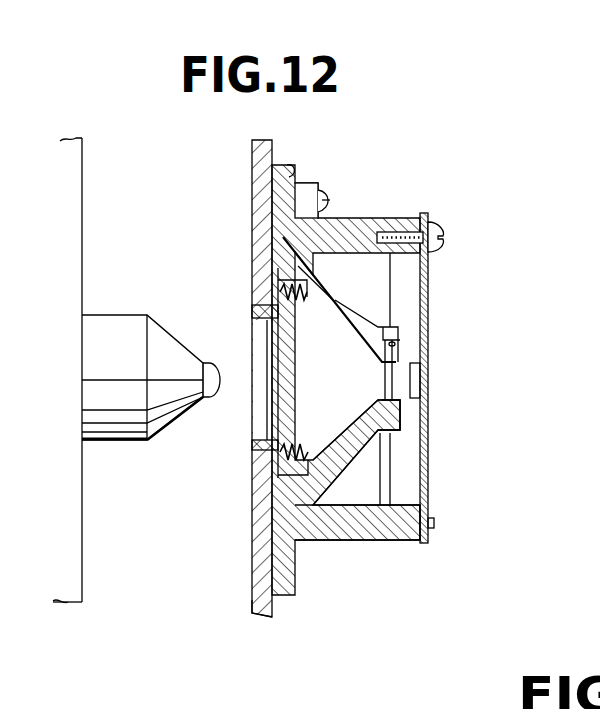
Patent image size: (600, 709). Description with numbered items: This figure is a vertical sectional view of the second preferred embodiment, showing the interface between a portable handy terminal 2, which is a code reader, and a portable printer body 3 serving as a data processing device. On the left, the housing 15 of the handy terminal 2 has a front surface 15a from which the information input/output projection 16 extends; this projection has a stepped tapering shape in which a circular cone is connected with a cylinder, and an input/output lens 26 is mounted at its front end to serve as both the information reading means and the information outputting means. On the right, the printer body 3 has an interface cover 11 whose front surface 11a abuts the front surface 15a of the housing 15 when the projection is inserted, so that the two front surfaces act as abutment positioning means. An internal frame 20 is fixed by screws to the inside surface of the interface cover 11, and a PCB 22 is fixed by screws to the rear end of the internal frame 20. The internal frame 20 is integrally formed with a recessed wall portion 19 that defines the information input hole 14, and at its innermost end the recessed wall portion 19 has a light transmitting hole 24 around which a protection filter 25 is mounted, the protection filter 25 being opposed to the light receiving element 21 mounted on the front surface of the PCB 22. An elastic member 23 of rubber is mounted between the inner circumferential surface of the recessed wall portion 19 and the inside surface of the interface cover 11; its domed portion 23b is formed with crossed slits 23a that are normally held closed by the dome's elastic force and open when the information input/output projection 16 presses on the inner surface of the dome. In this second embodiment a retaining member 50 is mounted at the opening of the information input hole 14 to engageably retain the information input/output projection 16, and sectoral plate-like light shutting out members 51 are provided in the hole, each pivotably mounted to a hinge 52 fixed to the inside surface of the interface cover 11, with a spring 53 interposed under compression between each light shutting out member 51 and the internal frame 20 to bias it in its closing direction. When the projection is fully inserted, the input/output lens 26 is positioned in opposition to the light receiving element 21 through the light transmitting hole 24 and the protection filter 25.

The handy terminal 2 is at (62, 205).
The printer body 3 is at (250, 162).
The interface cover 11 is at (268, 620).
The front surface of interface cover 11a is at (252, 578).
The information input hole 14 is at (268, 434).
The housing 15 is at (68, 588).
The front surface of housing 15a is at (82, 557).
The information input/output projection 16 is at (123, 422).
The recessed wall portion 19 is at (333, 300).
The internal frame 20 is at (287, 170).
The light receiving element 21 is at (412, 380).
The PCB 22 is at (425, 270).
The elastic member 23 is at (293, 492).
The crossed slits 23a is at (386, 510).
The domed portion 23b is at (340, 435).
The light transmitting hole 24 is at (402, 365).
The protection filter 25 is at (397, 410).
The input/output lens 26 is at (215, 365).
The retaining member 50 is at (272, 460).
The light shutting out member 51 is at (233, 321).
The hinge 52 is at (277, 285).
The spring 53 is at (262, 442).